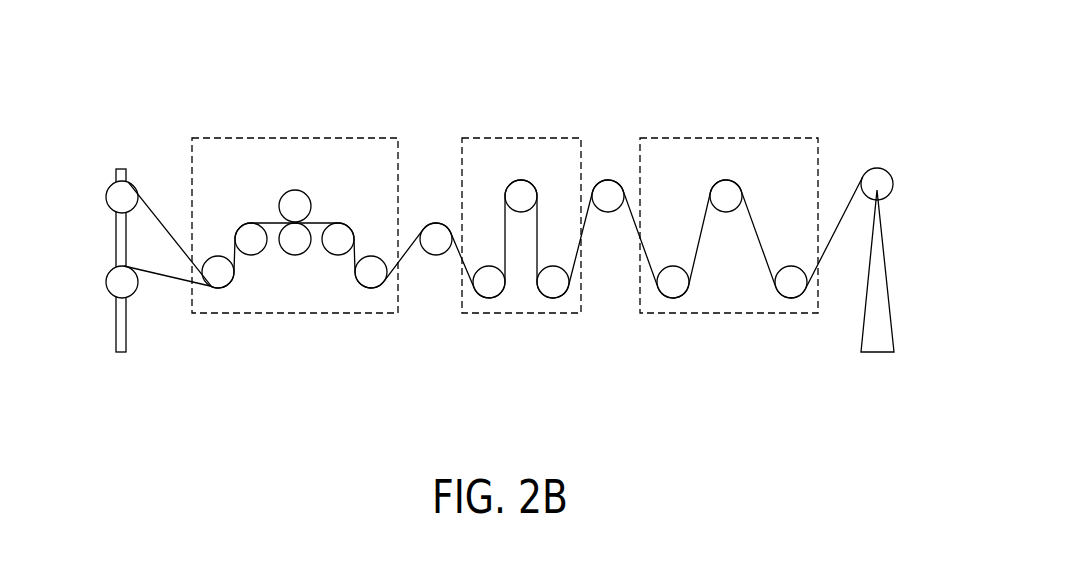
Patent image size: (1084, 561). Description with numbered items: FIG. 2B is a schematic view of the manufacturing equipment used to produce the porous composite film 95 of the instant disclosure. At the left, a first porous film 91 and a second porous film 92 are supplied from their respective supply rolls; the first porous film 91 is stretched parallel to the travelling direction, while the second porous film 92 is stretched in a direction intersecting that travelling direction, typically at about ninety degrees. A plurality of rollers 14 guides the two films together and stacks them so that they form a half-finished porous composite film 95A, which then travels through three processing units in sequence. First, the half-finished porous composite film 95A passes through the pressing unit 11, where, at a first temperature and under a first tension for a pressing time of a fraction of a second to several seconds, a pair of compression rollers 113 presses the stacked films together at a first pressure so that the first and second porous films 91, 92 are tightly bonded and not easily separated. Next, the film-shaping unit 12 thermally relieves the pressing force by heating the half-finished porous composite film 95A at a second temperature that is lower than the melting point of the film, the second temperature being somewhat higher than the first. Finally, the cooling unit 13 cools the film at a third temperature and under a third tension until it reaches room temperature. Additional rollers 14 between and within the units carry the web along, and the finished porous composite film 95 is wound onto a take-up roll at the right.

The pressing unit 11 is at (236, 134).
The film-shaping unit 12 is at (520, 134).
The cooling unit 13 is at (788, 134).
The rollers 14 is at (220, 274).
The first porous film 91 is at (160, 210).
The second porous film 92 is at (168, 280).
The porous composite film 95 is at (842, 213).
The half-finished porous composite film 95A is at (272, 224).
The compression rollers 113 is at (296, 206).